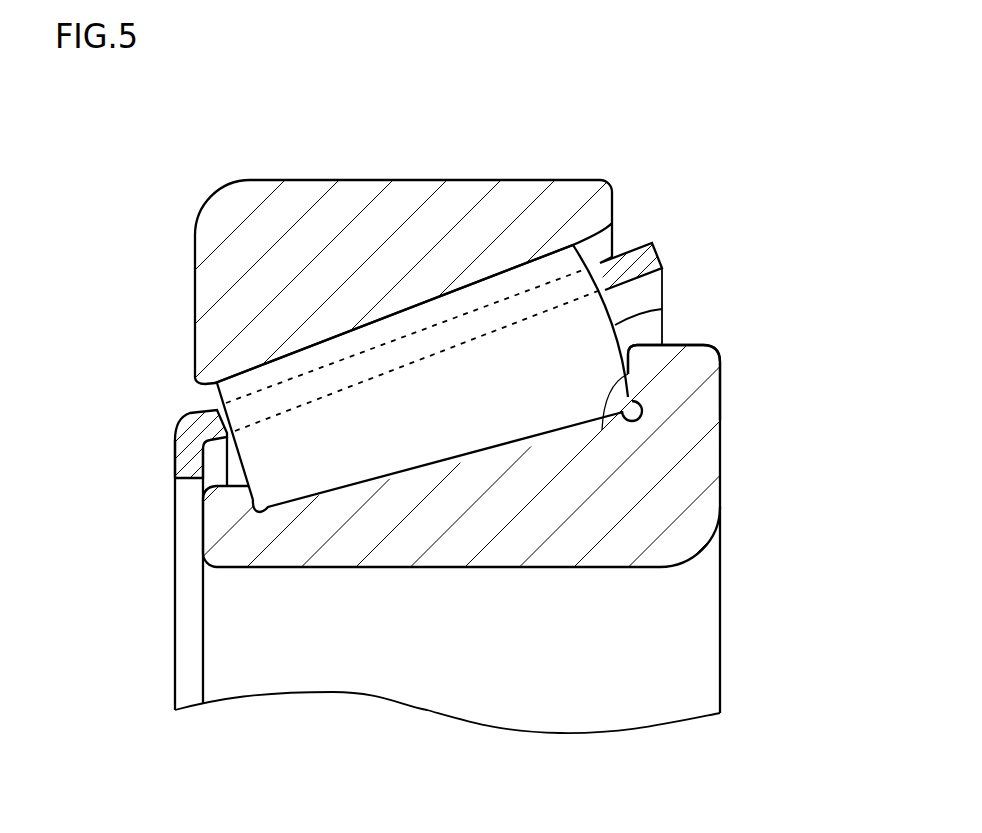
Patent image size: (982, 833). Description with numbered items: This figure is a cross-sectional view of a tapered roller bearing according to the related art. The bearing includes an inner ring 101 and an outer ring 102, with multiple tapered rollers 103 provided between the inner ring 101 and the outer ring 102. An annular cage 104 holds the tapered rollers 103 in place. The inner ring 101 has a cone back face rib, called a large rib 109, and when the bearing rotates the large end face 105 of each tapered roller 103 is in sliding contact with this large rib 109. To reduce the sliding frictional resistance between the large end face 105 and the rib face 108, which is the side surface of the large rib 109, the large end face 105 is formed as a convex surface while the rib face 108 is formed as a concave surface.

The inner ring 101 is at (741, 464).
The outer ring 102 is at (360, 160).
The tapered roller 103 is at (490, 444).
The cage 104 is at (673, 250).
The large end face 105 is at (662, 309).
The rib face 108 is at (602, 432).
The large rib 109 is at (670, 358).